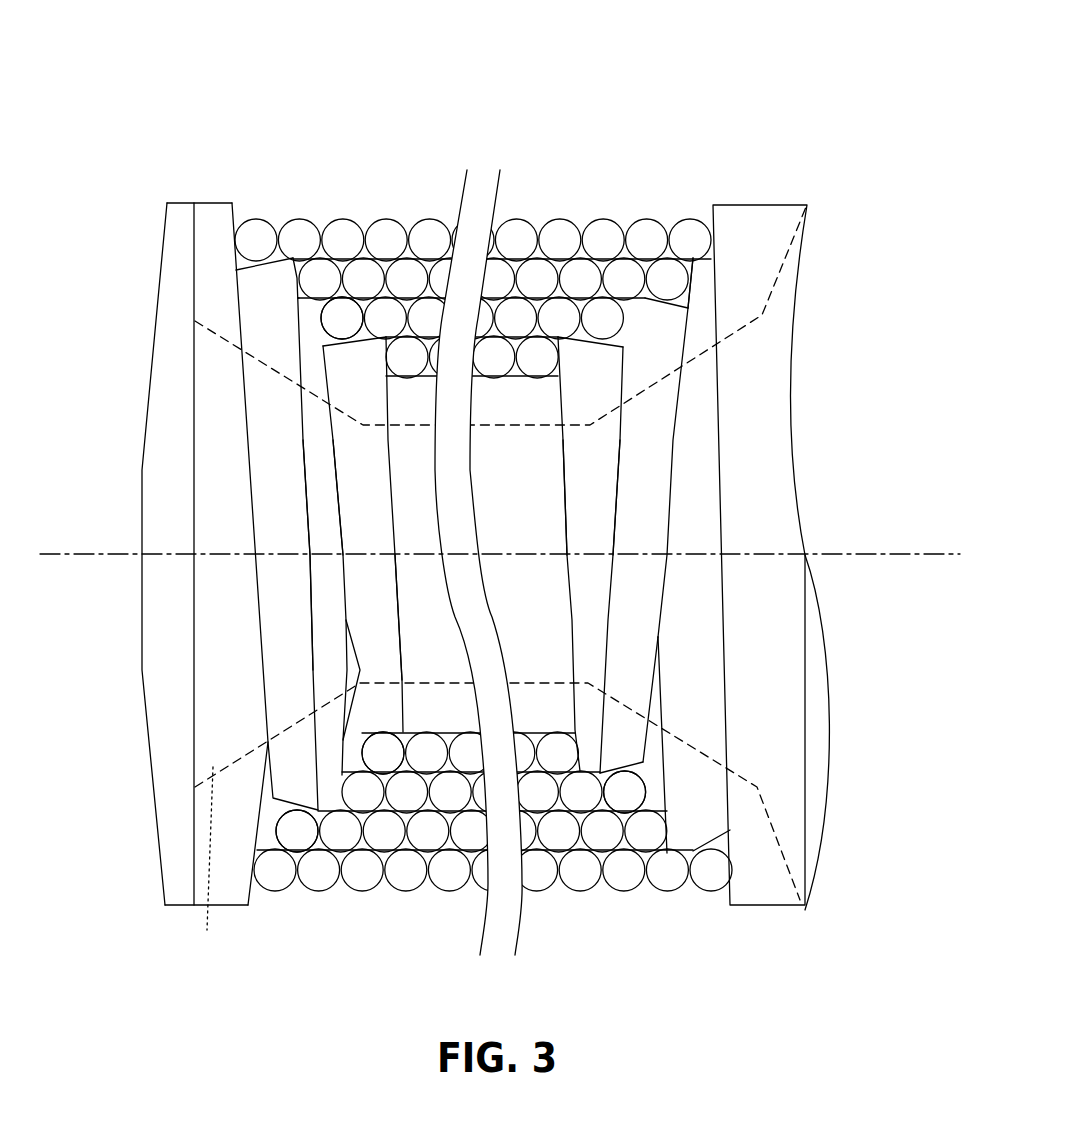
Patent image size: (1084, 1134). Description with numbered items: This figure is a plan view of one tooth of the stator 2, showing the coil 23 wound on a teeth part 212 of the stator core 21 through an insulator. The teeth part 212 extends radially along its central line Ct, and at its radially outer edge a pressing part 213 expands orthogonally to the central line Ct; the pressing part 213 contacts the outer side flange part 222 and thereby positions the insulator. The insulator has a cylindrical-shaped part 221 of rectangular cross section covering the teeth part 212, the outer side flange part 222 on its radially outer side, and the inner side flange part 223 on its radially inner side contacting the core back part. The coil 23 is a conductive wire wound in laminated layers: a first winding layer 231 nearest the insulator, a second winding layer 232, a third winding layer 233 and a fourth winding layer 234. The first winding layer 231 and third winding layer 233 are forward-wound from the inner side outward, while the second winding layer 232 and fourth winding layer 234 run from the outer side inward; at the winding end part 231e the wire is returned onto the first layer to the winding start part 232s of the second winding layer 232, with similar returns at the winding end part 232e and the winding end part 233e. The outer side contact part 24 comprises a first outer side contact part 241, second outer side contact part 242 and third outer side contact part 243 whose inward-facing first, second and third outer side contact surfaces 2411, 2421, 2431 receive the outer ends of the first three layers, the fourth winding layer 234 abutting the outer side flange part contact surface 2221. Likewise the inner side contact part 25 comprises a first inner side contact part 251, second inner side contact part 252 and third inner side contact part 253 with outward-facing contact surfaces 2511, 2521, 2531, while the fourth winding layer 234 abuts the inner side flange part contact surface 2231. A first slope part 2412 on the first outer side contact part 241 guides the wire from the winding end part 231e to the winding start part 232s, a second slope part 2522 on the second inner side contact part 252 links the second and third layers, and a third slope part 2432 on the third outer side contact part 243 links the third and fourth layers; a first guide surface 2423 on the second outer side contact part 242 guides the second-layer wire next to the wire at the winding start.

The stator 2 is at (522, 128).
The stator core 21 is at (166, 390).
The teeth part 212 is at (203, 863).
The pressing part 213 is at (175, 835).
The cylindrical-shaped part 221 is at (540, 585).
The outer side flange part 222 is at (200, 222).
The outer side flange part contact surface 2221 is at (263, 668).
The inner side flange part 223 is at (753, 247).
The inner side flange part contact surface 2231 is at (720, 652).
The coil 23 is at (445, 216).
The first winding layer 231 is at (568, 347).
The winding end part 231e is at (392, 760).
The second winding layer 232 is at (636, 324).
The winding start part 232s is at (322, 318).
The winding end part 232e is at (635, 793).
The third winding layer 233 is at (293, 279).
The winding end part 233e is at (305, 845).
The fourth winding layer 234 is at (228, 240).
The outer side contact part 24 is at (262, 370).
The first outer side contact part 241 is at (380, 492).
The first outer side contact surface 2411 is at (402, 650).
The first slope part 2412 is at (338, 350).
The second outer side contact part 242 is at (327, 515).
The second outer side contact surface 2421 is at (327, 382).
The first guide surface 2423 is at (350, 742).
The third outer side contact part 243 is at (290, 568).
The third outer side contact surface 2431 is at (312, 618).
The third slope part 2432 is at (263, 432).
The inner side contact part 25 is at (702, 413).
The first inner side contact part 251 is at (580, 455).
The first inner side contact surface 2511 is at (568, 493).
The second inner side contact part 252 is at (628, 390).
The second inner side contact surface 2521 is at (600, 545).
The second slope part 2522 is at (657, 438).
The third inner side contact part 253 is at (690, 260).
The third inner side contact surface 2531 is at (667, 493).
The central line Ct is at (932, 553).